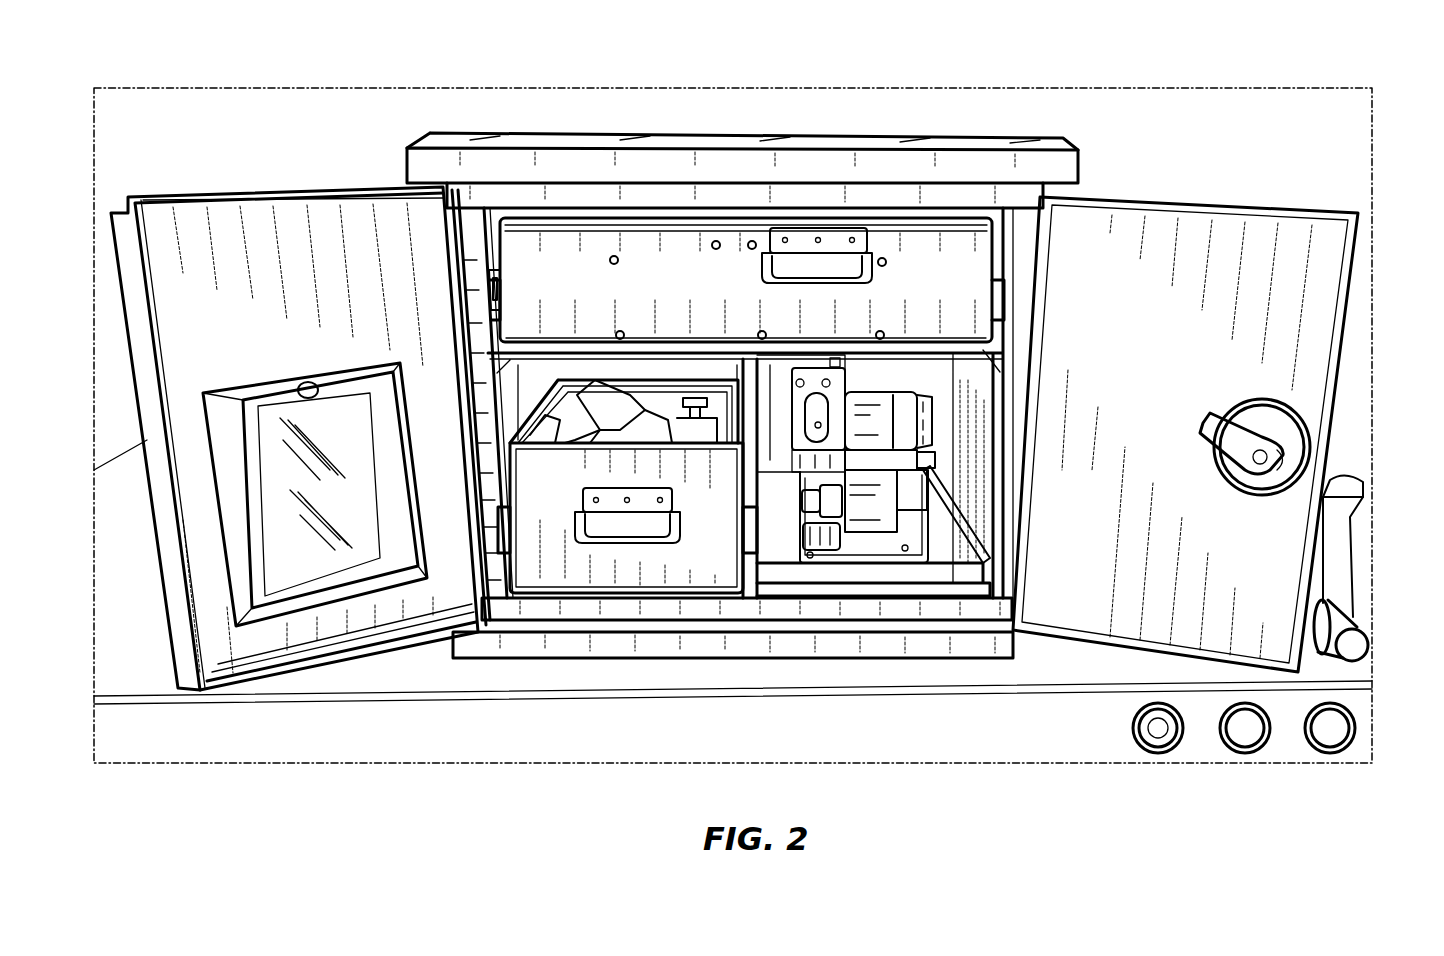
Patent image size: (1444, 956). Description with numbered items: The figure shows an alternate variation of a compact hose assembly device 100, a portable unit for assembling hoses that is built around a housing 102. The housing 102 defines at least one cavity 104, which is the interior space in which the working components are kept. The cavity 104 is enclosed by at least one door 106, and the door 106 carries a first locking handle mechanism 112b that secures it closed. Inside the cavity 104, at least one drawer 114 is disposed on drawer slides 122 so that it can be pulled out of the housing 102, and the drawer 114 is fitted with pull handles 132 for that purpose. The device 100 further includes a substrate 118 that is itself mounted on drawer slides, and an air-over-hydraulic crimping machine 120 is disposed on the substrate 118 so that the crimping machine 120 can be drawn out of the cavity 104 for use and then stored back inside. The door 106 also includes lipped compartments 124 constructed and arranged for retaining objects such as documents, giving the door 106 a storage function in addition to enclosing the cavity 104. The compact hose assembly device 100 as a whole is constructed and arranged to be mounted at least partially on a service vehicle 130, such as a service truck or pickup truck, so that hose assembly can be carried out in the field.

The compact hose assembly device 100 is at (990, 106).
The housing 102 is at (945, 163).
The cavity 104 is at (1003, 232).
The door 106 is at (1305, 312).
The first locking handle mechanism 112b is at (1278, 455).
The drawer 114 is at (613, 236).
The substrate 118 is at (937, 570).
The air-over-hydraulic crimping machine 120 is at (875, 515).
The drawer slides 122 is at (503, 293).
The lipped compartments 124 is at (260, 612).
The service vehicle 130 is at (148, 590).
The pull handles 132 is at (660, 540).